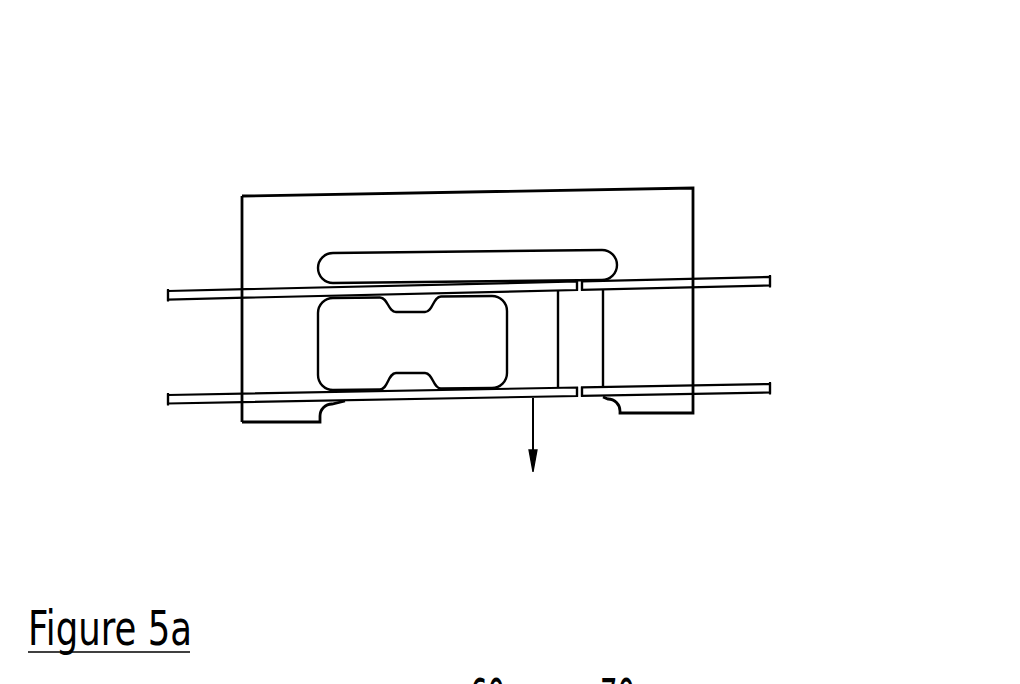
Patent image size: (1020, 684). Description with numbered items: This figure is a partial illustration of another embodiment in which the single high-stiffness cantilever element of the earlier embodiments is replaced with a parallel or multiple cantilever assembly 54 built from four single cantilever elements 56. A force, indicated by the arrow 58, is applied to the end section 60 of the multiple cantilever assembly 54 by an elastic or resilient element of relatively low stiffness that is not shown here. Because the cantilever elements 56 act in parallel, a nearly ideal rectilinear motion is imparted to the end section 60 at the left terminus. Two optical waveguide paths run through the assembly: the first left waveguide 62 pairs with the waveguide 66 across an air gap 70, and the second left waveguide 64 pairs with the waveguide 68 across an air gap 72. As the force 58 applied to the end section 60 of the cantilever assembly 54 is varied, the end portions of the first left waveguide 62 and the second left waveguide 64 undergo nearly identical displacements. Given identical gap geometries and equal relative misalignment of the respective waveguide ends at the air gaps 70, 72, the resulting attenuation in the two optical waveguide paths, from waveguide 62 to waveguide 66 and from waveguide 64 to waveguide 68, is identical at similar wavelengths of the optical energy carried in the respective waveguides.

The multiple cantilever assembly 54 is at (397, 428).
The single cantilever element 56 is at (355, 406).
The force 58 is at (535, 433).
The end section 60 is at (535, 333).
The first left waveguide 62 is at (195, 290).
The second left waveguide 64 is at (195, 404).
The right waveguide of first optical waveguide path 66 is at (738, 276).
The right waveguide of second optical waveguide path 68 is at (740, 383).
The air gap 70 is at (578, 280).
The air gap 72 is at (582, 400).